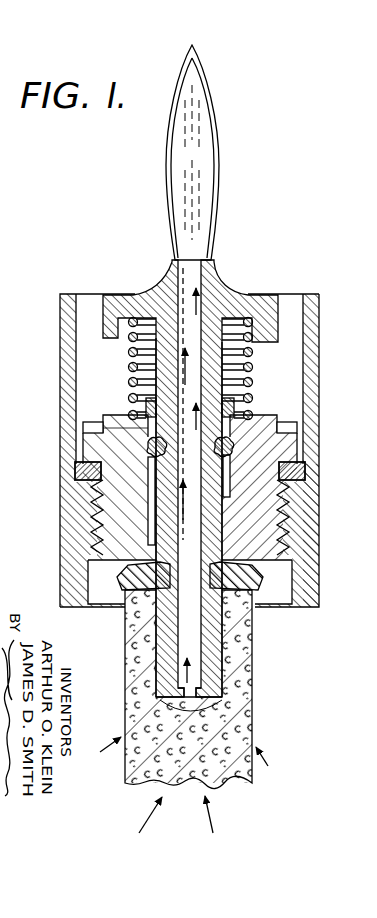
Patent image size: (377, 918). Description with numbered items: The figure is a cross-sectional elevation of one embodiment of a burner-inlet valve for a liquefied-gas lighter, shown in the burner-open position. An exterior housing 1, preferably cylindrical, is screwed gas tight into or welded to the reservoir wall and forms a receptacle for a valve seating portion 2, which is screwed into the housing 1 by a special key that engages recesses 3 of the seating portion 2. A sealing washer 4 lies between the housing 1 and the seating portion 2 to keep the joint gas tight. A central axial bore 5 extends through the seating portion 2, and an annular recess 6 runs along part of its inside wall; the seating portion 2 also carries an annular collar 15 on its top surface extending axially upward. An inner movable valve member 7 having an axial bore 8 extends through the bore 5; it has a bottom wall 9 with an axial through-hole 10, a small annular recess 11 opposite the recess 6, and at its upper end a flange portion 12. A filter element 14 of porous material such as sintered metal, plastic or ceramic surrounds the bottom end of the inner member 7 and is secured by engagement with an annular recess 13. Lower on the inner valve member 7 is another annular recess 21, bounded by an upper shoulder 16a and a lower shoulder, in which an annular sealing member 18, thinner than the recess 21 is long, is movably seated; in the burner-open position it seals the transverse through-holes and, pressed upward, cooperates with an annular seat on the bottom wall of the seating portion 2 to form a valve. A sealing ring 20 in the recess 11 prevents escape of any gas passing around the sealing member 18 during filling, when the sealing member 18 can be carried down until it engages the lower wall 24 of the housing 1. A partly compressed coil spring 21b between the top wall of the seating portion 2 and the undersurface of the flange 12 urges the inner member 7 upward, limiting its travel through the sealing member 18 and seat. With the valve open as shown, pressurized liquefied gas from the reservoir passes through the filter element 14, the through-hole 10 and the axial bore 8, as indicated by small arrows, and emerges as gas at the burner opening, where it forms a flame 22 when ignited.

The exterior housing 1 is at (320, 322).
The valve seating portion 2 is at (296, 448).
The recesses 3 is at (288, 422).
The sealing washer 4 is at (300, 474).
The central axial bore 5 is at (132, 406).
The annular recess 6 is at (230, 494).
The inner movable valve member 7 is at (252, 371).
The axial bore 8 is at (203, 300).
The bottom wall 9 is at (196, 702).
The axial through-hole 10 is at (215, 716).
The small annular recess 11 is at (214, 447).
The flange portion 12 is at (165, 278).
The annular recess 13 is at (222, 651).
The filter element 14 is at (226, 690).
The annular collar 15 is at (154, 396).
The upper shoulder 16a is at (232, 536).
The annular sealing member 18 is at (123, 573).
The sealing ring 20 is at (150, 446).
The annular recess 21 is at (120, 564).
The coil spring 21b is at (130, 353).
The flame 22 is at (219, 179).
The lower wall 24 is at (258, 606).